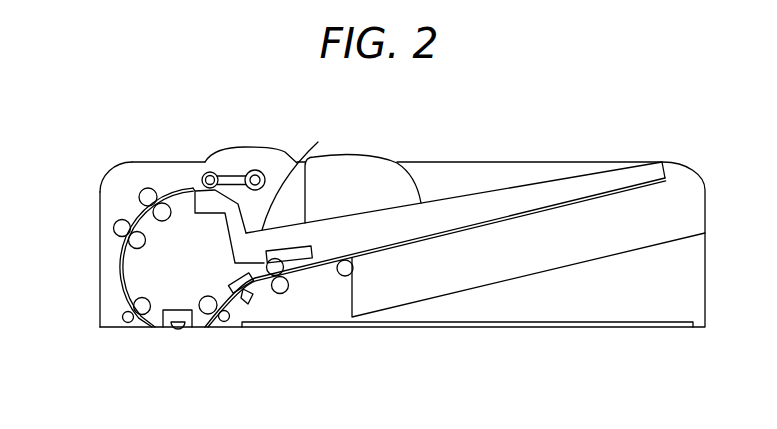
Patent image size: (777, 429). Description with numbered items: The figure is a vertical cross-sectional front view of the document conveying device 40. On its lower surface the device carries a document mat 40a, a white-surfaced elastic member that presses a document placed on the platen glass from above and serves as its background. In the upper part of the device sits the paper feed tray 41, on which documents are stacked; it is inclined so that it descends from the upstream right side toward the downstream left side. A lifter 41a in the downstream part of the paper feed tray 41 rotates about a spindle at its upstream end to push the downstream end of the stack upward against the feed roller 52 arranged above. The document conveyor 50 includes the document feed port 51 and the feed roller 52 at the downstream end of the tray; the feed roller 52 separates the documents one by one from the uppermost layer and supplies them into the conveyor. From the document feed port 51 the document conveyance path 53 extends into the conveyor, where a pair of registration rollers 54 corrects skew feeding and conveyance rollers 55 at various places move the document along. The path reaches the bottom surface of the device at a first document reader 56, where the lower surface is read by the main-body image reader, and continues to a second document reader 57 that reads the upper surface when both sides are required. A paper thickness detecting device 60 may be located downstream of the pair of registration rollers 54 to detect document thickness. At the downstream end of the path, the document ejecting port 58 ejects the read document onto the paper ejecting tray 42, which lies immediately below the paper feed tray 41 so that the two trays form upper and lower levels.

The document conveying device 40 is at (178, 140).
The document mat 40a is at (575, 322).
The paper feed tray 41 is at (478, 191).
The lifter 41a is at (298, 172).
The paper ejecting tray 42 is at (482, 285).
The document conveyor 50 is at (105, 257).
The document feed port 51 is at (237, 193).
The feed roller 52 is at (261, 172).
The document conveyance path 53 is at (116, 283).
The pair of registration rollers 54 is at (142, 186).
The conveyance rollers 55 is at (127, 323).
The first document reader 56 is at (178, 333).
The second document reader 57 is at (230, 273).
The document ejecting port 58 is at (354, 261).
The paper thickness detecting device 60 is at (110, 217).